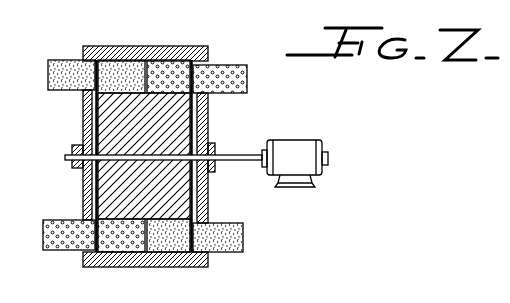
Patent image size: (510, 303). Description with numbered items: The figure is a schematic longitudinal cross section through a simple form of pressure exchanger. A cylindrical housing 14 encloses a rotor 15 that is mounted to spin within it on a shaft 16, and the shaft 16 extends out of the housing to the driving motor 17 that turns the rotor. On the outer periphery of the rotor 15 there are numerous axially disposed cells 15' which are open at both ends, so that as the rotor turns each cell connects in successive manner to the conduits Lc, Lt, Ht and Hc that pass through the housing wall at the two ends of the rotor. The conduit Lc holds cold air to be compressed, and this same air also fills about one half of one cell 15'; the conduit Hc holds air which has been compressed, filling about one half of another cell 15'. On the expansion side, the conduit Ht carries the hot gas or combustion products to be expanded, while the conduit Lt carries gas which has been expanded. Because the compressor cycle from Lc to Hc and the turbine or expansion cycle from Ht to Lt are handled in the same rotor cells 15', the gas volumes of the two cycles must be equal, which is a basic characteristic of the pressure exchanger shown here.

The cylindrical housing 14 is at (208, 120).
The rotor 15 is at (117, 156).
The cells 15' is at (144, 155).
The shaft 16 is at (230, 162).
The driving motor 17 is at (302, 141).
The conduit Ht is at (65, 67).
The conduit Hc is at (238, 63).
The conduit Lc is at (58, 253).
The conduit Lt is at (230, 255).